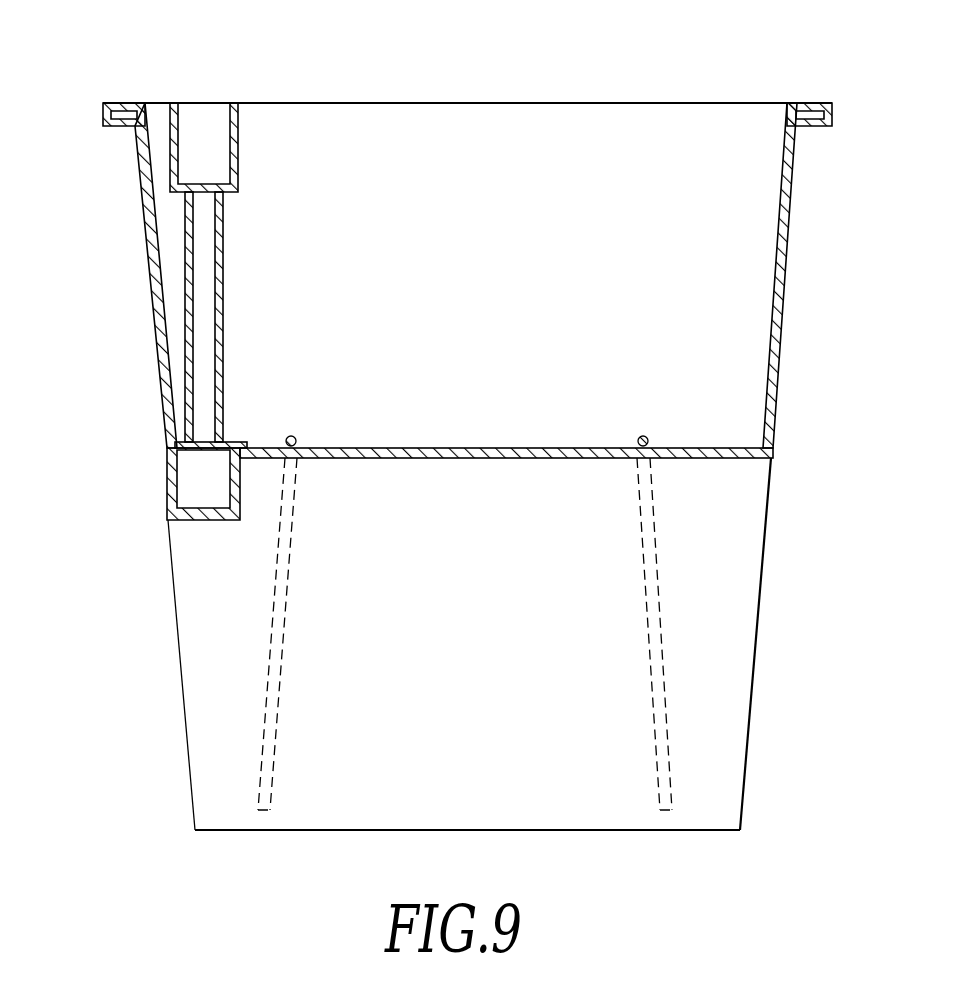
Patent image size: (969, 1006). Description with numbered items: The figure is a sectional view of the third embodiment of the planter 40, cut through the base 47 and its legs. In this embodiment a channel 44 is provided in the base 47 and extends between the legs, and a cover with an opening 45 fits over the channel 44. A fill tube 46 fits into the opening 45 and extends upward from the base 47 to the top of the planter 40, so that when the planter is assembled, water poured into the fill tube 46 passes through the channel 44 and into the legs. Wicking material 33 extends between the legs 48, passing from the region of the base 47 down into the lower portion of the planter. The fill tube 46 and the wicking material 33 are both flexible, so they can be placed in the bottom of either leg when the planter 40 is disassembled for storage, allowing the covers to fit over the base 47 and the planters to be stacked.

The planter 40 is at (113, 70).
The wicking material 33 is at (296, 436).
The channel 44 is at (190, 484).
The opening 45 is at (200, 445).
The fill tube 46 is at (223, 296).
The base 47 is at (445, 447).
The legs 48 is at (732, 613).